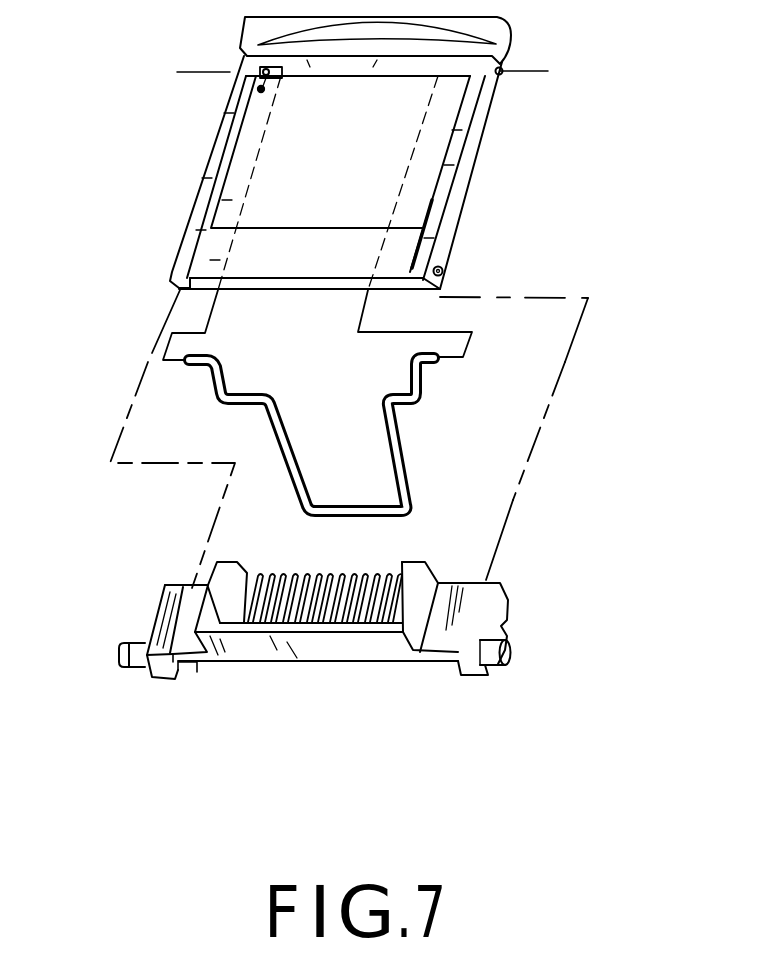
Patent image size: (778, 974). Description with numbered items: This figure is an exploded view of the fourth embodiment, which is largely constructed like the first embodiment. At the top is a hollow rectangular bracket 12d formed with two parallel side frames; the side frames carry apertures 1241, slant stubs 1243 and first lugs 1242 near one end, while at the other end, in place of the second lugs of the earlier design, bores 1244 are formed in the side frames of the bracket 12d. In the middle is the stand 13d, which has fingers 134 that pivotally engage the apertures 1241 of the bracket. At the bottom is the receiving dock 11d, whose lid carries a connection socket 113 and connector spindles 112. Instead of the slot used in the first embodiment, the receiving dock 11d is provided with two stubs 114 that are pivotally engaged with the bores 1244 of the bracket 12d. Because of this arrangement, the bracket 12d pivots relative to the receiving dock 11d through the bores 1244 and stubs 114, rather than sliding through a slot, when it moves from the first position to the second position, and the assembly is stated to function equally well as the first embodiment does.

The bracket 12d is at (546, 141).
The apertures 1241 is at (506, 64).
The first lugs 1242 is at (264, 92).
The slant stubs 1243 is at (275, 74).
The bores 1244 is at (444, 266).
The stand 13d is at (427, 453).
The fingers 134 is at (423, 380).
The receiving dock 11d is at (522, 565).
The connection socket 113 is at (262, 588).
The connector spindles 112 is at (510, 644).
The stubs 114 is at (186, 667).